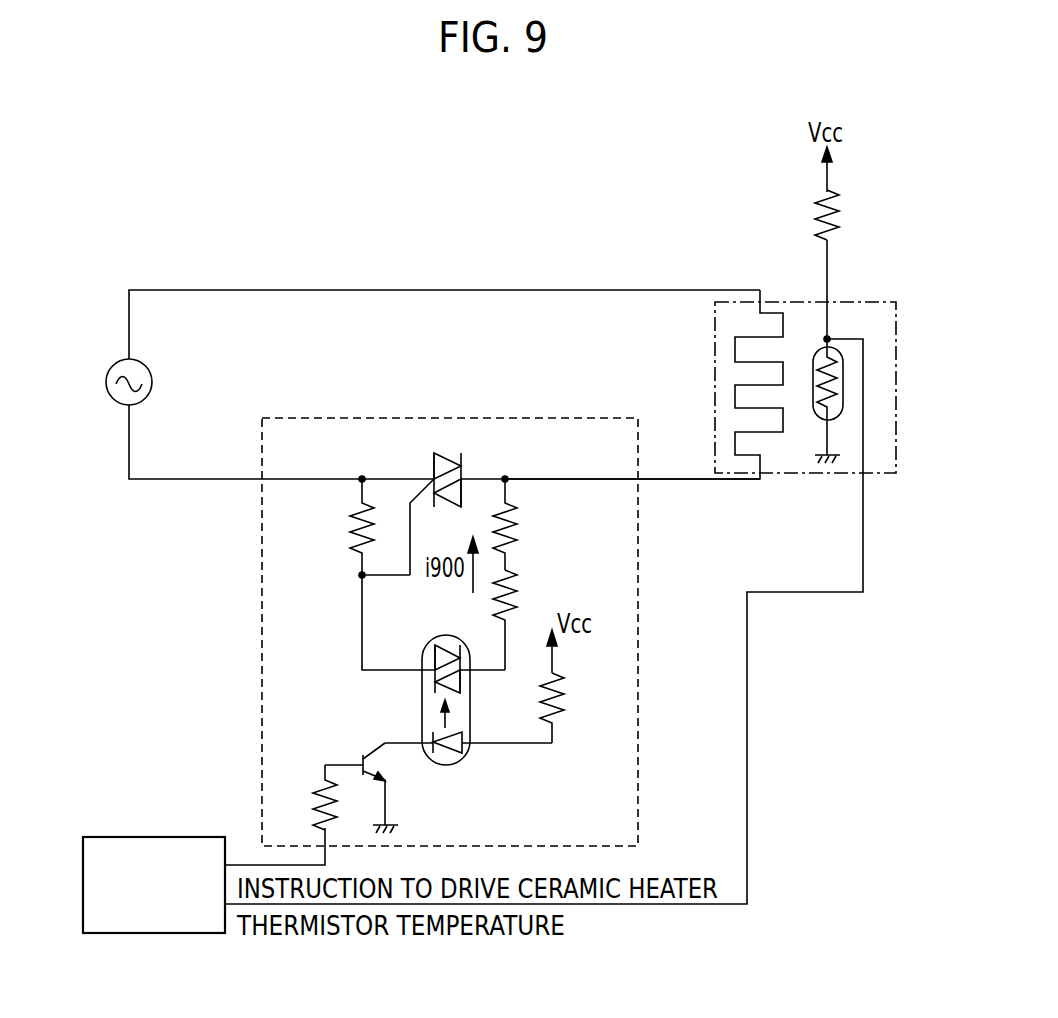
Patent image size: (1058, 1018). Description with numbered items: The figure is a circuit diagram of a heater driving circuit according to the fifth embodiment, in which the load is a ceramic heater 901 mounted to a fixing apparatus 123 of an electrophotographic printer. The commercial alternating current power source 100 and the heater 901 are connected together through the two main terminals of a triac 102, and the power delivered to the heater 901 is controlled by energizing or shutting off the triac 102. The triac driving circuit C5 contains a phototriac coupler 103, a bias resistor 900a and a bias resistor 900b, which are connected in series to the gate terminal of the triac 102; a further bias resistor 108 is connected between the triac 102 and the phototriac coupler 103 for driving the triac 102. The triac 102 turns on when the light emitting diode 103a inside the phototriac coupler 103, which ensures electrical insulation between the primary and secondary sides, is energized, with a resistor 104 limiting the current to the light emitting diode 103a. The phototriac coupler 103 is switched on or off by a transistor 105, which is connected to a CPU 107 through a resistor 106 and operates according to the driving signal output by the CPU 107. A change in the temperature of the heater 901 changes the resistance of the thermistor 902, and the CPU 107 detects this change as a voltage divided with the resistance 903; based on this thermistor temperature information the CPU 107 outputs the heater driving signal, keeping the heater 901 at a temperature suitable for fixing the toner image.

The commercial alternating current power source 100 is at (148, 396).
The triac 102 is at (452, 458).
The phototriac coupler 103 is at (443, 636).
The light emitting diode 103a is at (458, 752).
The resistor 104 is at (565, 703).
The transistor 105 is at (392, 771).
The resistor 106 is at (309, 801).
The CPU 107 is at (193, 837).
The bias resistor 108 is at (352, 527).
The fixing apparatus 123 is at (862, 302).
The bias resistor 900a is at (524, 516).
The bias resistor 900b is at (524, 586).
The heater 901 is at (787, 334).
The thermistor 902 is at (840, 415).
The resistance 903 is at (834, 206).
The triac driving circuit C5 is at (640, 822).